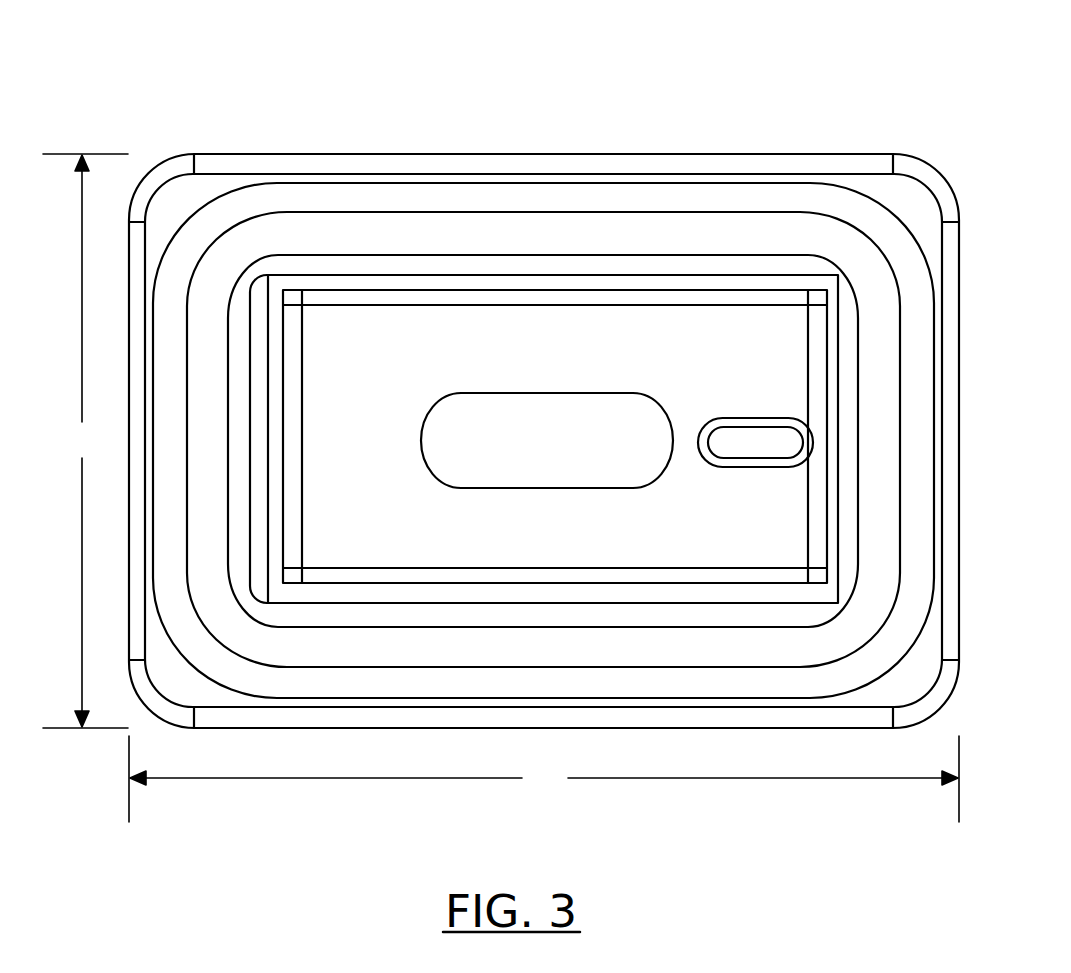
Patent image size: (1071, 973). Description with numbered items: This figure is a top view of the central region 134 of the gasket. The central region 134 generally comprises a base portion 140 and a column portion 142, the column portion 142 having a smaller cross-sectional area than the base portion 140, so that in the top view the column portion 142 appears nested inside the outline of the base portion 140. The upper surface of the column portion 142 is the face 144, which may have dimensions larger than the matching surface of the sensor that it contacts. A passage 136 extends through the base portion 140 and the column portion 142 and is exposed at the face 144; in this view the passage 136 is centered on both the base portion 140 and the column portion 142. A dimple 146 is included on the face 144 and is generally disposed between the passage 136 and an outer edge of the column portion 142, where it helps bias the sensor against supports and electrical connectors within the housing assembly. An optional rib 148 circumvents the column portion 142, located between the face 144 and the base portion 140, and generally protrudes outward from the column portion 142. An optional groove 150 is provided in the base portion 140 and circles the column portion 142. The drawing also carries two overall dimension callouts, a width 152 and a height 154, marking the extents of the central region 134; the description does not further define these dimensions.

The central region 134 is at (468, 37).
The base portion 140 is at (332, 152).
The column portion 142 is at (658, 273).
The face 144 is at (369, 359).
The passage 136 is at (527, 393).
The dimple 146 is at (752, 418).
The rib 148 is at (443, 255).
The groove 150 is at (418, 666).
The width dimension 152 is at (544, 779).
The height dimension 154 is at (85, 441).